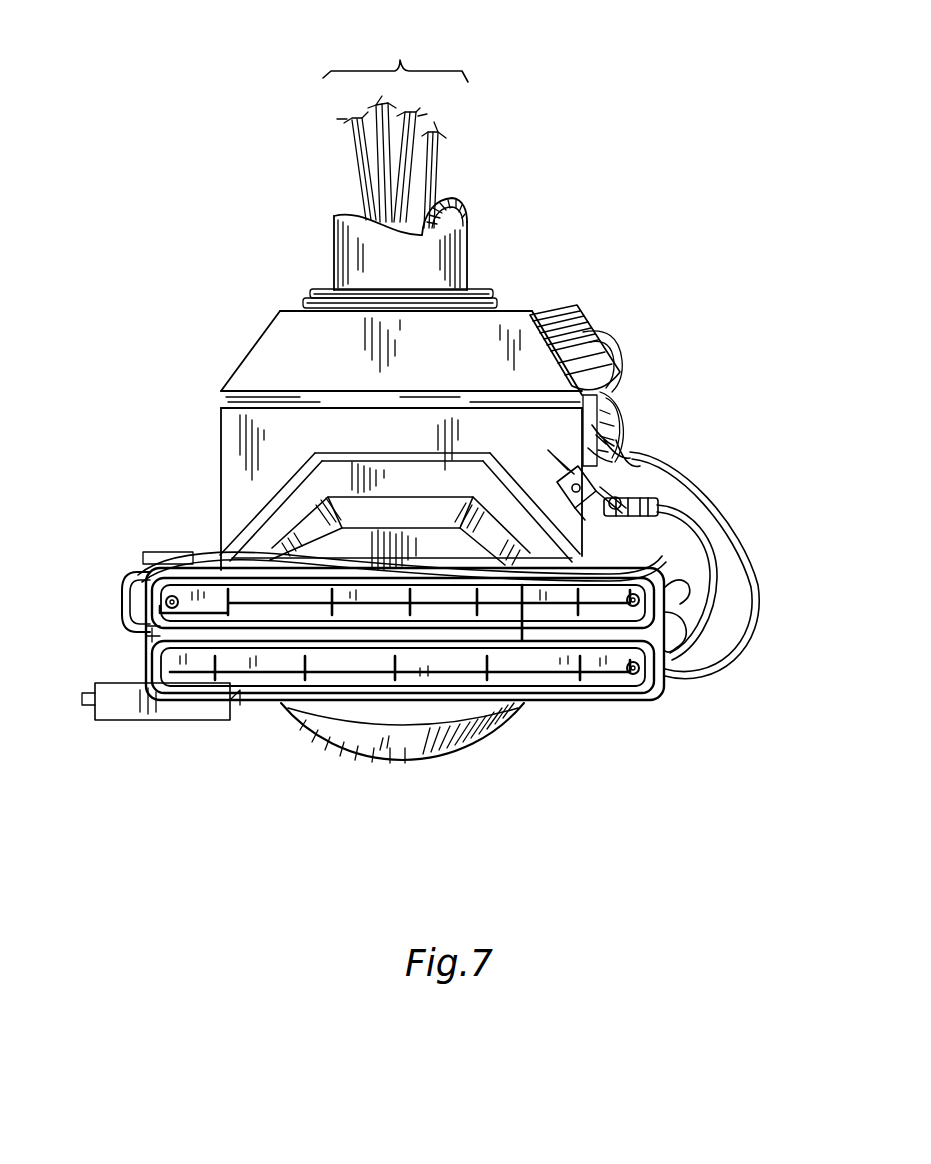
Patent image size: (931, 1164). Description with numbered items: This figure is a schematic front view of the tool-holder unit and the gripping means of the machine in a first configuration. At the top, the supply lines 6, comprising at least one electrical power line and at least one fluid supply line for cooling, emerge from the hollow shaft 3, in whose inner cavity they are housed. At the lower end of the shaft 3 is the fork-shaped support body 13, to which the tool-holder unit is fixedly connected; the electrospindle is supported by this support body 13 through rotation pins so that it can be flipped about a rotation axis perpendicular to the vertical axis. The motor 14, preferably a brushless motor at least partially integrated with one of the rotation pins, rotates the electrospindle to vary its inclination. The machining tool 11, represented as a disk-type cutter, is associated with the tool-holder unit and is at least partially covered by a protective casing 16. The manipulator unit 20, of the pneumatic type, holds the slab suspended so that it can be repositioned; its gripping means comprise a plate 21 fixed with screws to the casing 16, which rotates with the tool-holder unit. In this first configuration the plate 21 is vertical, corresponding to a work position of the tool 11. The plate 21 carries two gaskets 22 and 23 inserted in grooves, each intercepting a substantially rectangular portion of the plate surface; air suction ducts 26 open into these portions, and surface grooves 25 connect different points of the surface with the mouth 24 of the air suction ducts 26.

The supply lines 6 is at (400, 60).
The shaft 3 is at (450, 252).
The fork-shaped support body 13 is at (276, 356).
The protective casing 16 is at (287, 503).
The manipulator unit 20 is at (782, 690).
The plate 21 is at (157, 638).
The gasket 22 is at (623, 700).
The gasket 23 is at (143, 627).
The mouth of the air suction duct 24 is at (165, 600).
The surface grooves 25 is at (288, 600).
The air suction ducts 26 is at (197, 557).
The motor 14 is at (128, 594).
The machining tool 11 is at (338, 745).